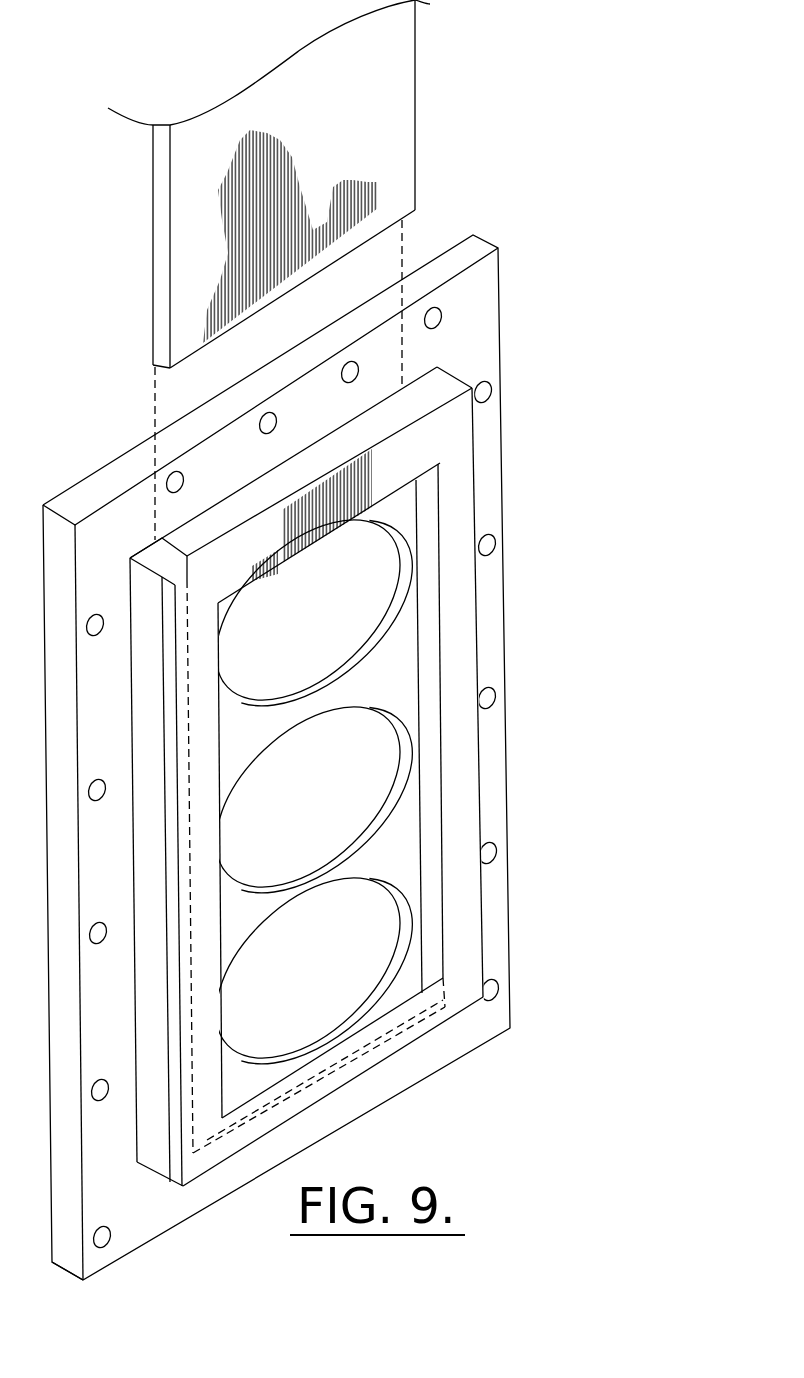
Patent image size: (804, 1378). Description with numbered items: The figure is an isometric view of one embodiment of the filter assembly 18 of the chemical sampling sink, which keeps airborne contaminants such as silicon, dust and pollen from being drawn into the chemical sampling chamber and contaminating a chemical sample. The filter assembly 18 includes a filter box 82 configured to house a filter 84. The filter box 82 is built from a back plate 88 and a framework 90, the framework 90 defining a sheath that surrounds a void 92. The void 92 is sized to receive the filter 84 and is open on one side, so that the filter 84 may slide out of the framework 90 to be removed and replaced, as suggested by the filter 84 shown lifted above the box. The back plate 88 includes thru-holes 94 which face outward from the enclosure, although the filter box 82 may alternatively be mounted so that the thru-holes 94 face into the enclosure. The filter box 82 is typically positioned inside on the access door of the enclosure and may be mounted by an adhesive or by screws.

The filter assembly 18 is at (570, 208).
The filter box 82 is at (512, 756).
The filter 84 is at (415, 98).
The back plate 88 is at (435, 1073).
The framework 90 is at (316, 868).
The void 92 is at (478, 315).
The thru-holes 94 is at (357, 809).